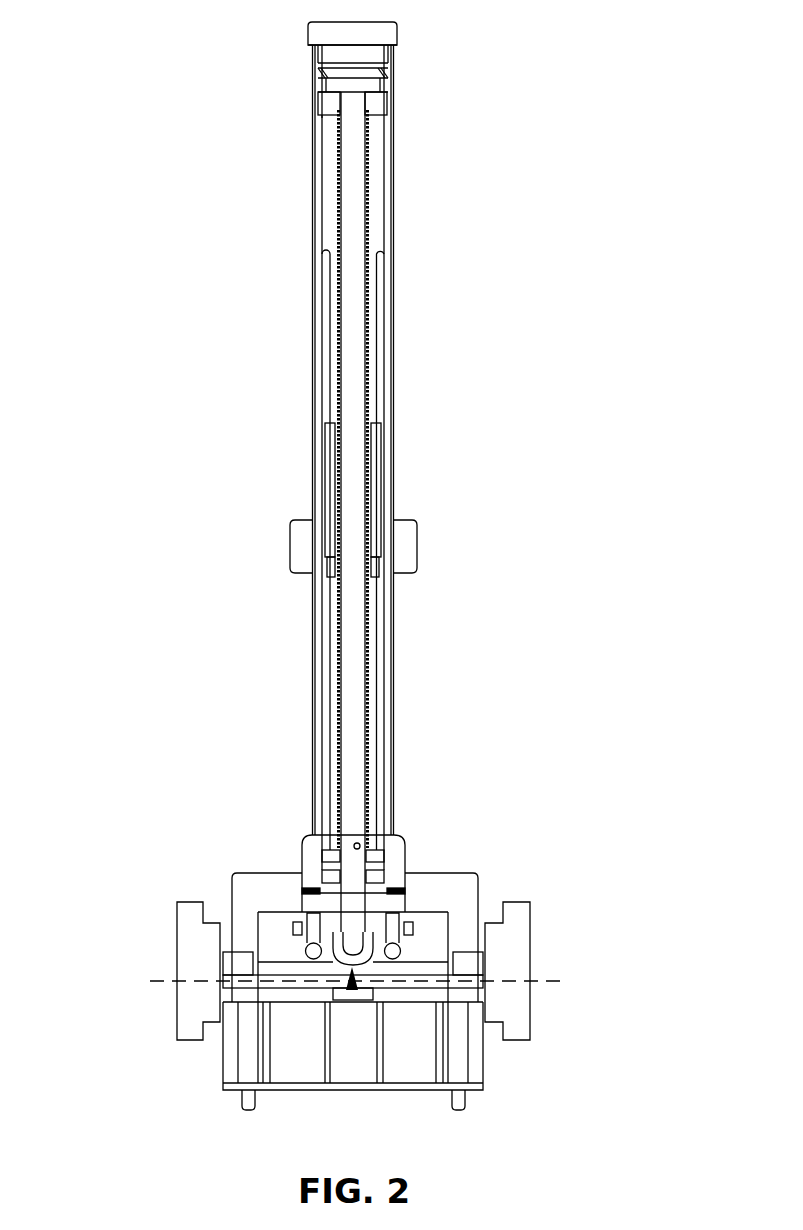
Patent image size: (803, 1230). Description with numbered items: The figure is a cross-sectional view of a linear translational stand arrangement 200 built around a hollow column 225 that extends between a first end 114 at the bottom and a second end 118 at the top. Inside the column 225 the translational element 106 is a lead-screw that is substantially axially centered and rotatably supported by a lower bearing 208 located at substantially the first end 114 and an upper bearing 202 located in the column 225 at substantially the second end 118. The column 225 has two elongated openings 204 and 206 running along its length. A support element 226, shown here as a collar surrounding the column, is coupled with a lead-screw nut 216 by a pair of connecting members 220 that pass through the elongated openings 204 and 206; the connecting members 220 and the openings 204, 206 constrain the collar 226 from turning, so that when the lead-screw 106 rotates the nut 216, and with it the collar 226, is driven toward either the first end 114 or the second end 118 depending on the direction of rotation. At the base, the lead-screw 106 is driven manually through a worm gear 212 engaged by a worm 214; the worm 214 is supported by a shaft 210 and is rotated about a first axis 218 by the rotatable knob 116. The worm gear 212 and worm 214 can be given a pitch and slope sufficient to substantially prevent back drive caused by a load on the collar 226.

The linear translational stand arrangement 200 is at (98, 97).
The second end 118 is at (262, 44).
The upper bearing 202 is at (375, 99).
The hollow column 225 is at (313, 305).
The translational element 106 is at (357, 375).
The lead-screw nut 216 is at (372, 452).
The connecting members 220 is at (330, 537).
The support element 226 is at (290, 545).
The elongated opening 206 is at (325, 740).
The elongated opening 204 is at (383, 740).
The lower bearing 208 is at (380, 857).
The first end 114 is at (291, 846).
The rotatable knob 116 is at (530, 940).
The first axis 218 is at (553, 986).
The worm 214 is at (356, 982).
The worm gear 212 is at (350, 990).
The shaft 210 is at (412, 998).